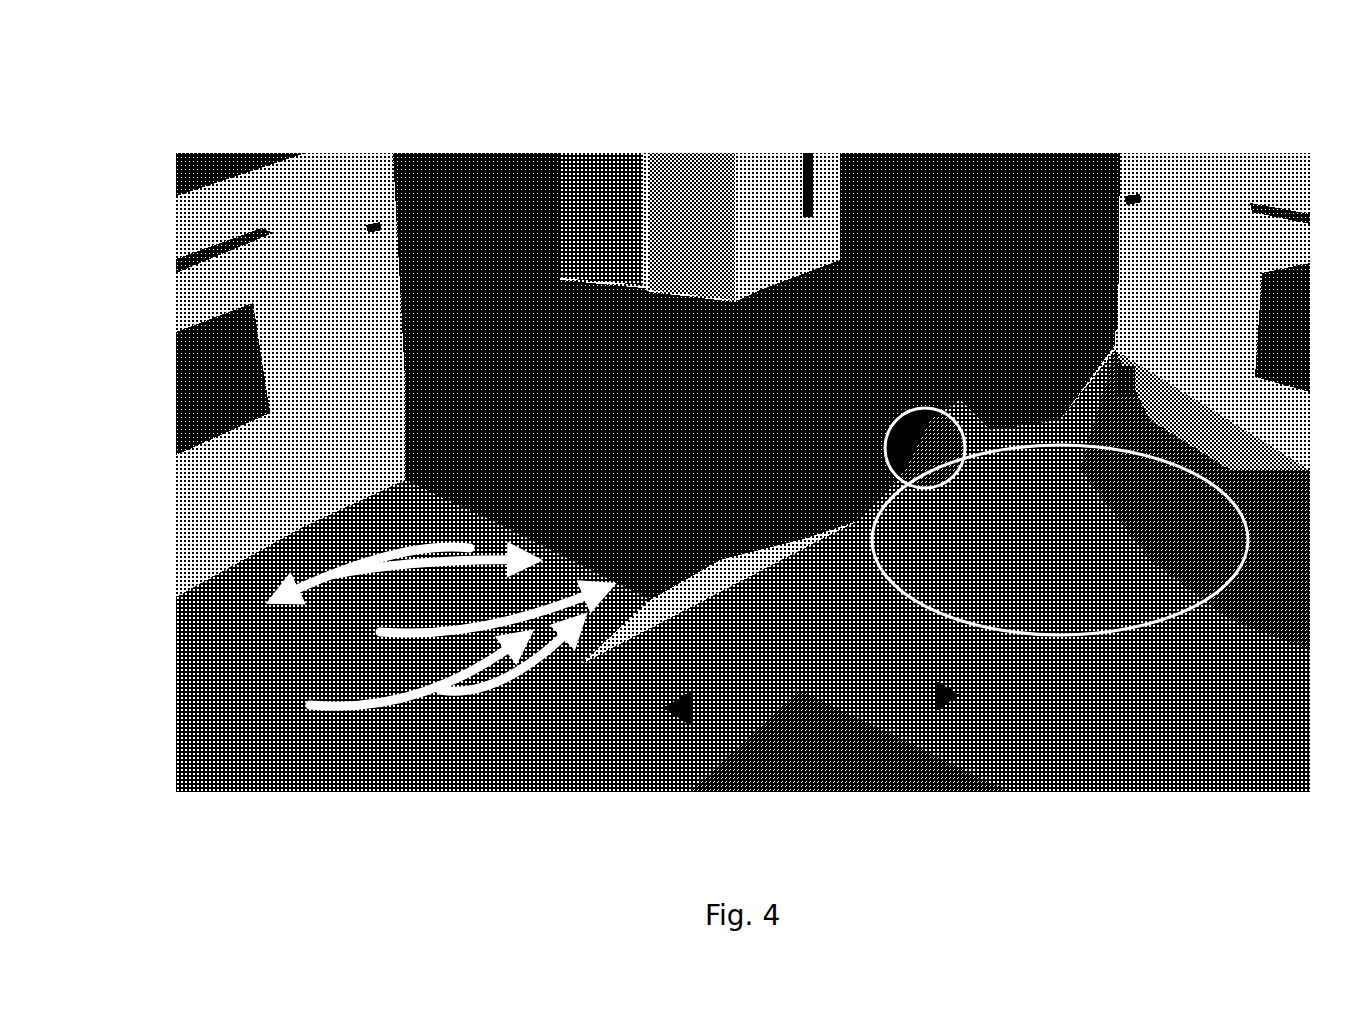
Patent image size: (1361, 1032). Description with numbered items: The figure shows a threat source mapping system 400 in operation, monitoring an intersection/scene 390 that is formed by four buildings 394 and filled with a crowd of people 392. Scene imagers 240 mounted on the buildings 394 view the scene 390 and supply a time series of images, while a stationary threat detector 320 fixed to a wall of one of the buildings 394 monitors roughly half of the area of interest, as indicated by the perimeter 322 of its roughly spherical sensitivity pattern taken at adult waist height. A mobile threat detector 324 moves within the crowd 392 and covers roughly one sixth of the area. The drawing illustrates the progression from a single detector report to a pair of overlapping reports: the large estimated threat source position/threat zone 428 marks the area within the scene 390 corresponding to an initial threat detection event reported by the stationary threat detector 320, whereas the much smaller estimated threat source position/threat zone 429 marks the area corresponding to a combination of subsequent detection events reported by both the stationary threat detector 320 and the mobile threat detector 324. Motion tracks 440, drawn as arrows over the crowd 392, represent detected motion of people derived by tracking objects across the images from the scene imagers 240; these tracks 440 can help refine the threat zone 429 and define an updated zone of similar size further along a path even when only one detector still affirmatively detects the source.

The threat source mapping system 400 is at (182, 91).
The scene imagers 240 is at (374, 224).
The intersection/scene 390 is at (707, 137).
The crowd of people 392 is at (1000, 156).
The buildings 394 is at (345, 204).
The estimated threat source position/threat zone 429 is at (898, 405).
The estimated threat source position/threat zone 428 is at (1225, 475).
The perimeter 322 is at (1272, 224).
The mobile threat detector 324 is at (406, 376).
The stationary threat detector 320 is at (1138, 378).
The motion tracks 440 is at (340, 560).